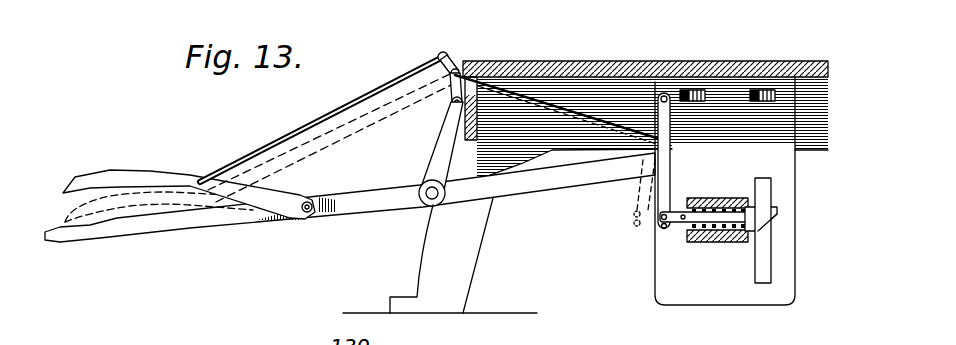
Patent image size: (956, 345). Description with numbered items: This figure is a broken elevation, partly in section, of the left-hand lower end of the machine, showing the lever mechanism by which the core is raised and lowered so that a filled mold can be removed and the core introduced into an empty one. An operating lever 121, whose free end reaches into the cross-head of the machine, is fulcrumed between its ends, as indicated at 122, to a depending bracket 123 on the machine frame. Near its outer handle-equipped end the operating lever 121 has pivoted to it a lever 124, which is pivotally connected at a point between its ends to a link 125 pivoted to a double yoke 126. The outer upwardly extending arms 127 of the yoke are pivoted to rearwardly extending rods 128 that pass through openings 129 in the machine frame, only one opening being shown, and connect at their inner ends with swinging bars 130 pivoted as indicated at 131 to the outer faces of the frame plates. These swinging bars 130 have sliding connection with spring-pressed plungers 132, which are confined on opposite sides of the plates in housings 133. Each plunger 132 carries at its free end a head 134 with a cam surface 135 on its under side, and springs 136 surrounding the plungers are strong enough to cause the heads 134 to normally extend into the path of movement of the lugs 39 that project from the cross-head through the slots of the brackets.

The lugs 39 is at (773, 197).
The operating lever 121 is at (363, 207).
The fulcrum 122 is at (430, 208).
The depending bracket 123 is at (463, 150).
The lever 124 is at (275, 190).
The link 125 is at (298, 128).
The double yoke 126 is at (447, 72).
The outer upwardly extending arms 127 is at (451, 105).
The rearwardly extending rods 128 is at (550, 118).
The openings 129 is at (483, 73).
The swinging bars 130 is at (672, 172).
The pivots 131 is at (690, 100).
The spring-pressed plungers 132 is at (717, 224).
The housings 133 is at (688, 240).
The head 134 is at (762, 216).
The cam surface 135 is at (760, 230).
The springs 136 is at (727, 238).